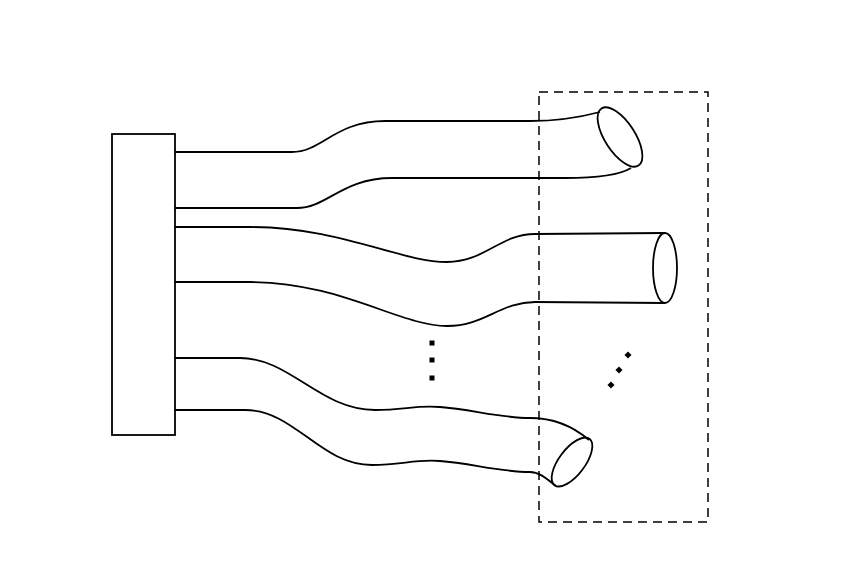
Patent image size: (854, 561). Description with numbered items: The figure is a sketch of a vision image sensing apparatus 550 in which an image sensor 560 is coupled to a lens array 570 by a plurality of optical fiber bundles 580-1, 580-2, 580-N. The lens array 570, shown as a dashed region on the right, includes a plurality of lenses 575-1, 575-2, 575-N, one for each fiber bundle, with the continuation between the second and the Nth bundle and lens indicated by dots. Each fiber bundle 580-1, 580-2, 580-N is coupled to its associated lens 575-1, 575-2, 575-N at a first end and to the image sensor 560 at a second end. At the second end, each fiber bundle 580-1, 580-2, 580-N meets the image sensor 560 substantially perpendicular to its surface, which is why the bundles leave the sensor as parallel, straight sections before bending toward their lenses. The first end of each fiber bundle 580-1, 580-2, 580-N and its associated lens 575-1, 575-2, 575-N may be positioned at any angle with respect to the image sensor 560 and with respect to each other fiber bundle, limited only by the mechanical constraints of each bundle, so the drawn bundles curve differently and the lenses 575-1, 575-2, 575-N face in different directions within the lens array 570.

The apparatus 550 is at (106, 96).
The image sensor 560 is at (144, 443).
The lens array 570 is at (625, 91).
The lens 575-1 is at (647, 156).
The lens 575-2 is at (676, 303).
The lens 575-N is at (598, 454).
The optical fiber bundle 580-1 is at (301, 148).
The optical fiber bundle 580-2 is at (380, 240).
The optical fiber bundle 580-N is at (204, 356).